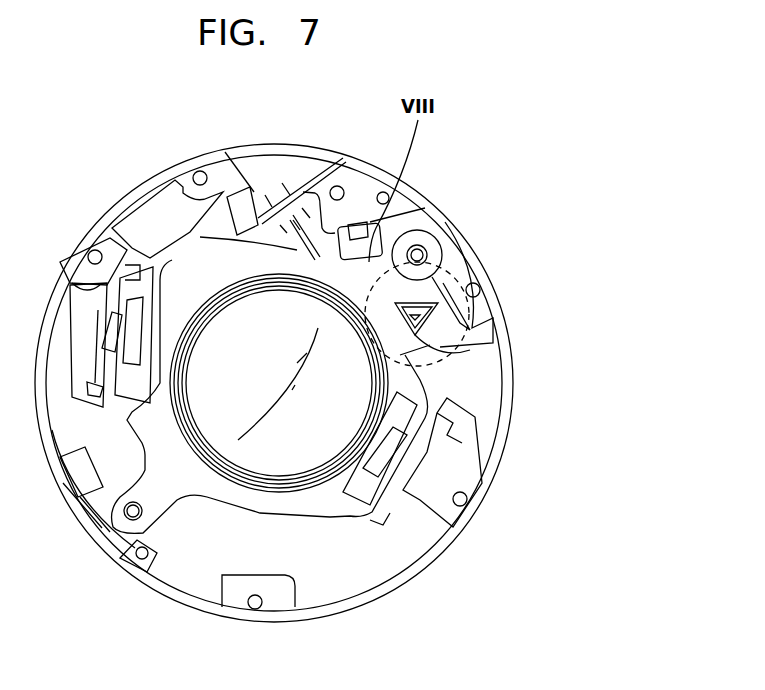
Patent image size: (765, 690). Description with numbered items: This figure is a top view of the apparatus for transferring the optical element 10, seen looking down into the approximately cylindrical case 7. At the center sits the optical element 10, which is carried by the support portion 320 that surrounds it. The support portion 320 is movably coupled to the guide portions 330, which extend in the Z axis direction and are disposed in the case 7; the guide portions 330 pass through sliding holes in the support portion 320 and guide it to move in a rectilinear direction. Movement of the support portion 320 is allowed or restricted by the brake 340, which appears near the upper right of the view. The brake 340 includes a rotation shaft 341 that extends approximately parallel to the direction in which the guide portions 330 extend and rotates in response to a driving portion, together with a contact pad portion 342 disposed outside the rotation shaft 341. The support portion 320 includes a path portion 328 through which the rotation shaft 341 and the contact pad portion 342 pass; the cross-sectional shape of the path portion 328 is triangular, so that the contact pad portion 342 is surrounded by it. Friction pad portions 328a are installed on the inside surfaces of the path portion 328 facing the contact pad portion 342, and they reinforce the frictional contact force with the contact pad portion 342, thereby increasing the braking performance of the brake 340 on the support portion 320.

The case 7 is at (292, 157).
The optical element 10 is at (290, 418).
The support portion 320 is at (216, 504).
The path portion 328 is at (398, 364).
The friction pad portions 328a is at (430, 349).
The guide portions 330 is at (425, 252).
The brake 340 is at (523, 287).
The rotation shaft 341 is at (437, 304).
The contact pad portion 342 is at (416, 313).